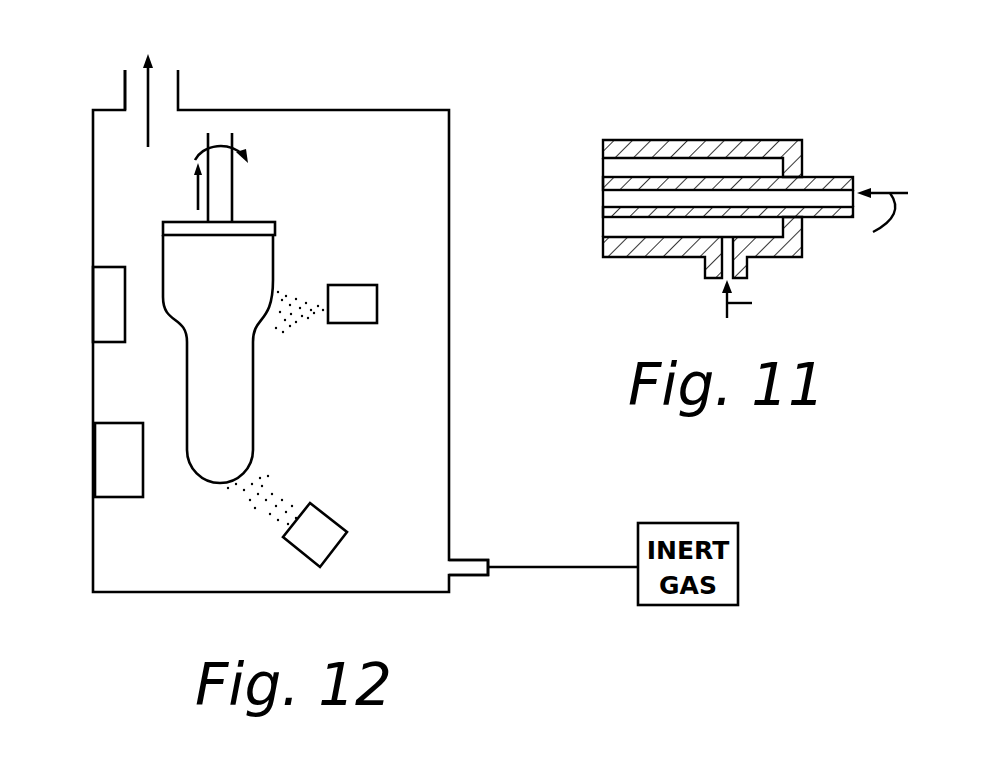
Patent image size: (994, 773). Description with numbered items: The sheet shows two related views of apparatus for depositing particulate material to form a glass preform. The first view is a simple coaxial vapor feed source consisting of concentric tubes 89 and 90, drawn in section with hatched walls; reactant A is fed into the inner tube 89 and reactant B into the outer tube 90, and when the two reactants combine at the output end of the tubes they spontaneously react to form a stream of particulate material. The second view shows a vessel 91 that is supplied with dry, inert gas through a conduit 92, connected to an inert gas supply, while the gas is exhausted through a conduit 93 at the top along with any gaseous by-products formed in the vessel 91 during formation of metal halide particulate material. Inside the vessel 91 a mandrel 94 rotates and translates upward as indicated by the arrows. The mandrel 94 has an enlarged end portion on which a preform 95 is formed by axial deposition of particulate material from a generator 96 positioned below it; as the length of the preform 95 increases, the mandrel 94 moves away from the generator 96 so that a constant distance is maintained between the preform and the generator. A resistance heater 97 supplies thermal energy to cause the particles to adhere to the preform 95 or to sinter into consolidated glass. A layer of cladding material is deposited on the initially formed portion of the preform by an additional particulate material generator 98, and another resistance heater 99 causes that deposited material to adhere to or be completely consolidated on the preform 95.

In FIG. 11, the tube 89 is at (832, 176).
In FIG. 11, the tube 90 is at (692, 140).
In FIG. 12, the vessel 91 is at (350, 103).
In FIG. 12, the conduit 92 is at (473, 557).
In FIG. 12, the conduit 93 is at (178, 82).
In FIG. 12, the mandrel 94 is at (232, 200).
In FIG. 12, the preform 95 is at (262, 383).
In FIG. 12, the generator 96 is at (328, 515).
In FIG. 12, the resistance heater 97 is at (108, 460).
In FIG. 12, the particulate material generator 98 is at (350, 283).
In FIG. 12, the resistance heater 99 is at (107, 305).